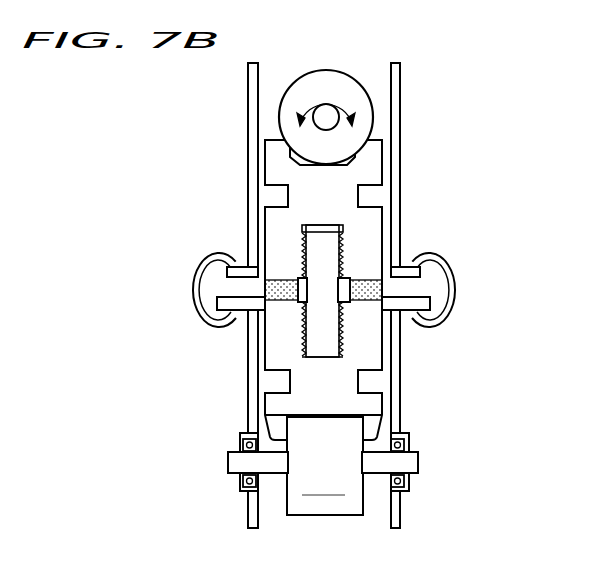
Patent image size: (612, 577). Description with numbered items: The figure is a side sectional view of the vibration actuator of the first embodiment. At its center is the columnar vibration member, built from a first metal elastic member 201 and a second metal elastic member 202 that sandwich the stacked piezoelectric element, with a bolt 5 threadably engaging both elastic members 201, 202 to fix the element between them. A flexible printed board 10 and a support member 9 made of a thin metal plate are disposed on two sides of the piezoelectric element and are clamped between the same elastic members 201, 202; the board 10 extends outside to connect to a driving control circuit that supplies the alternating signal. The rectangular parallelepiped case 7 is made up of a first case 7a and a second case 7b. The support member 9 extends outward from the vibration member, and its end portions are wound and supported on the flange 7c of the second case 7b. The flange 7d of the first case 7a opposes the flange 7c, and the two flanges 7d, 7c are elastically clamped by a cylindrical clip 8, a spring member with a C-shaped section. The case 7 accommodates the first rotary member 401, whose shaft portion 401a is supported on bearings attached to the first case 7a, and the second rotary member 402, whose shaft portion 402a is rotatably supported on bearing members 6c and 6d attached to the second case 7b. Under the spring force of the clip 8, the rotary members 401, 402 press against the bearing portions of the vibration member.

The bolt 5 is at (330, 240).
The case 7 is at (420, 137).
The first case 7a is at (400, 89).
The second case 7b is at (399, 405).
The flange 7c is at (230, 306).
The flange 7d is at (240, 269).
The cylindrical clip 8 is at (196, 272).
The support member 9 is at (402, 358).
The flexible printed board 10 is at (366, 281).
The first metal elastic member 201 is at (265, 160).
The second metal elastic member 202 is at (278, 350).
The first rotary member 401 is at (293, 88).
The shaft portion 401a is at (318, 118).
The second rotary member 402 is at (295, 482).
The shaft portion 402a is at (240, 459).
The bearing member 6c is at (240, 487).
The bearing member 6d is at (410, 444).